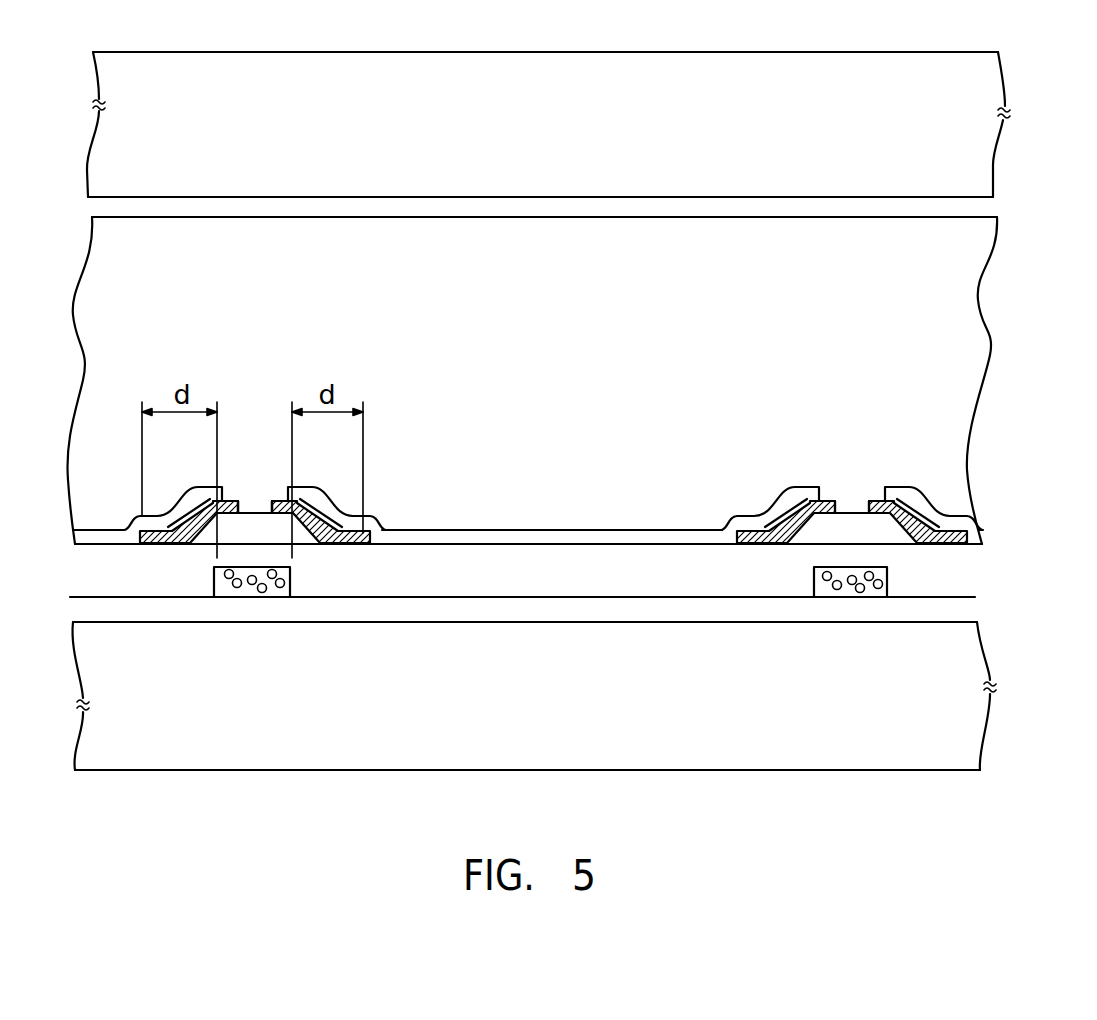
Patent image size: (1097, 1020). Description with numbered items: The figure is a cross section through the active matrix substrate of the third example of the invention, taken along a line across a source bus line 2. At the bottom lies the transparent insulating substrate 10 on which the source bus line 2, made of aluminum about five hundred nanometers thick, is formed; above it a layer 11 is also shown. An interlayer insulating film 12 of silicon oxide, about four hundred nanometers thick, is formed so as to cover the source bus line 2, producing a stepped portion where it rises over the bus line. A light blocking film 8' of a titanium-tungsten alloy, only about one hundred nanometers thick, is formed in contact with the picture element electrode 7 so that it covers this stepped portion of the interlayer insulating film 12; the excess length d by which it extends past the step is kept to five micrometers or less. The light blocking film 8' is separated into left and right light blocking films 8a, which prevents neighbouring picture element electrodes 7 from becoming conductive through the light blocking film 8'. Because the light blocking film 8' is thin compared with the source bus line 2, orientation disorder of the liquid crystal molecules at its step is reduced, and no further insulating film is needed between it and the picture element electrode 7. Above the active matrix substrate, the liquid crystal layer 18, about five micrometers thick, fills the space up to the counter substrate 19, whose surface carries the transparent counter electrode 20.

The counter substrate 19 is at (980, 137).
The counter electrode 20 is at (709, 206).
The liquid crystal layer 18 is at (975, 353).
The interlayer insulating film 12 is at (578, 557).
The picture element electrode 7 is at (375, 518).
The light blocking films 8a is at (172, 543).
The light blocking film 8' is at (250, 445).
The insulating layer 11 is at (966, 609).
The source bus line 2 is at (271, 590).
The transparent insulating substrate 10 is at (963, 708).